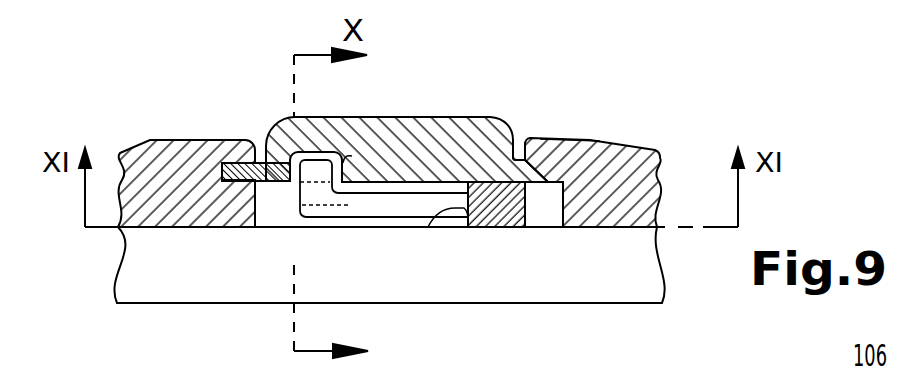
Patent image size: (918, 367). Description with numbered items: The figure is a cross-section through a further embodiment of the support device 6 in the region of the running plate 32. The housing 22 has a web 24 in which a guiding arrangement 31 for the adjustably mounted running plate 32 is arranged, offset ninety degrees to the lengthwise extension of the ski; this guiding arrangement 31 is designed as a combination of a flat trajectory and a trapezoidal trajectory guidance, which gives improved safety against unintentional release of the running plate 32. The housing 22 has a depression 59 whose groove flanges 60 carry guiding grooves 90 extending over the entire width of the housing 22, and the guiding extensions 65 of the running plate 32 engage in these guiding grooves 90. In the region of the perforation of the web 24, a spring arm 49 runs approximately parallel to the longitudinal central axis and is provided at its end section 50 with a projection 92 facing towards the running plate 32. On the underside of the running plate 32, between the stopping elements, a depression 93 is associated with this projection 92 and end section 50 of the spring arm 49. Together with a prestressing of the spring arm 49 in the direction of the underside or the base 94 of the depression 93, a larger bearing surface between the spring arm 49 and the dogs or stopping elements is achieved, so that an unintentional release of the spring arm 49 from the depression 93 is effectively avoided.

The support device 6 is at (645, 87).
The housing 22 is at (670, 134).
The web 24 is at (165, 150).
The guiding arrangement 31 is at (540, 122).
The running plate 32 is at (403, 150).
The spring arm 49 is at (415, 207).
The end section 50 is at (335, 243).
The depression 59 is at (468, 227).
The groove flange 60 is at (260, 155).
The guiding extension 65 is at (232, 150).
The guiding groove 90 is at (236, 180).
The projection 92 is at (315, 158).
The depression 93 is at (287, 196).
The base 94 is at (350, 156).